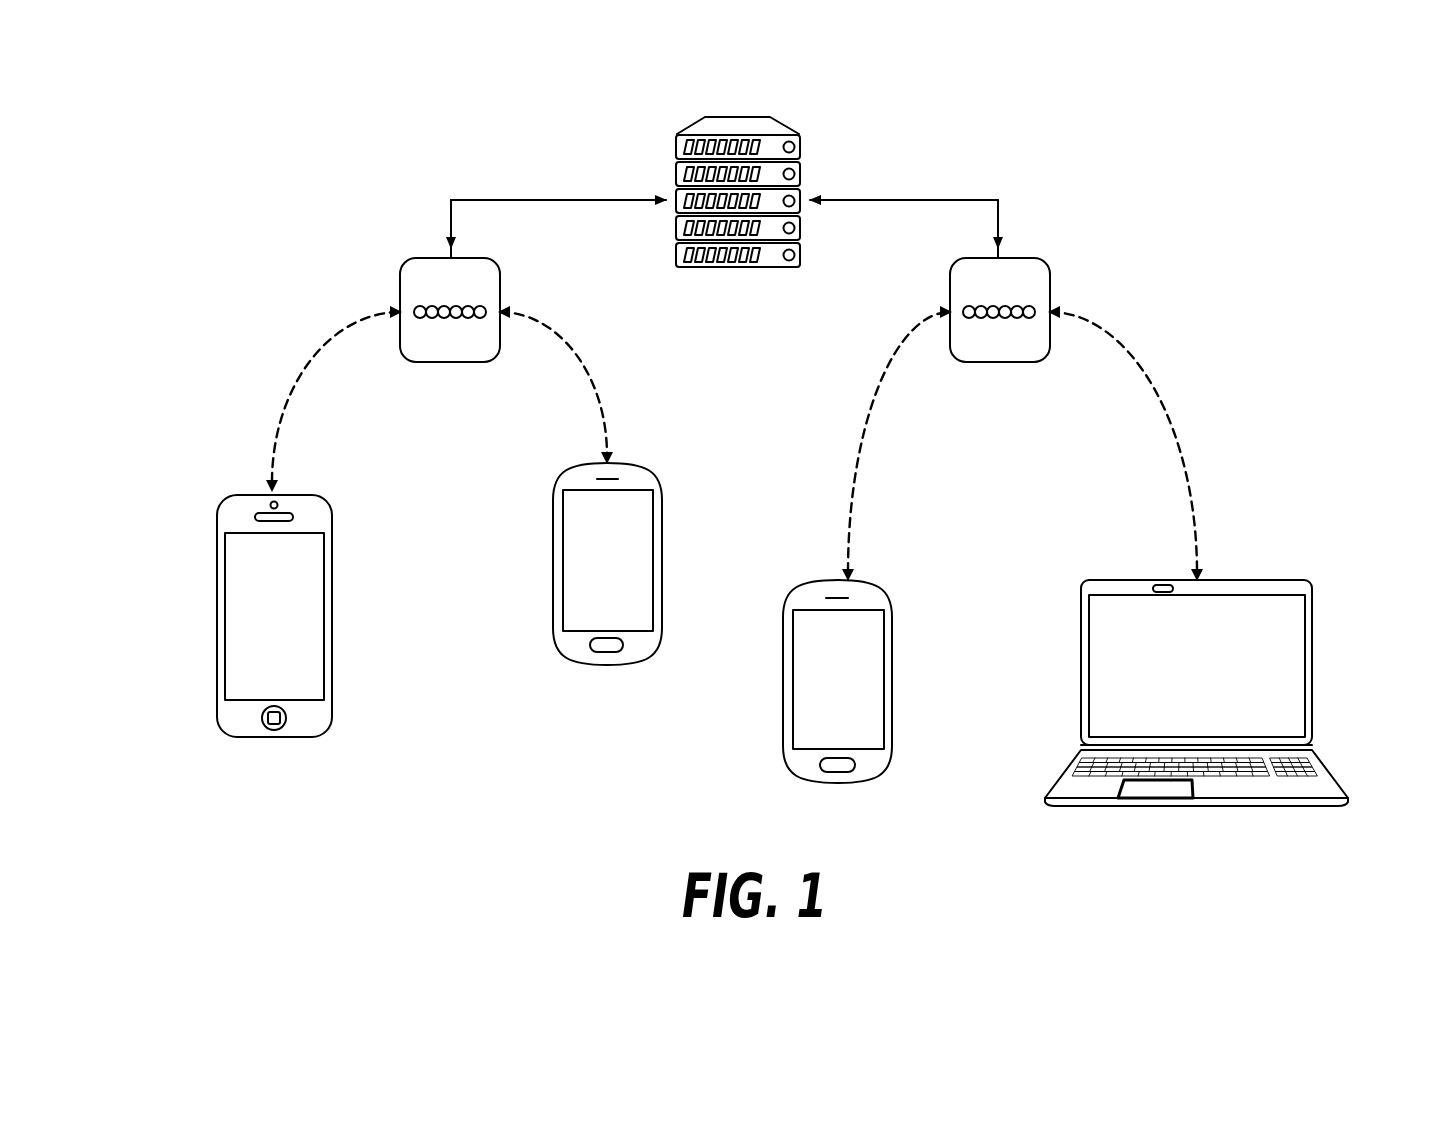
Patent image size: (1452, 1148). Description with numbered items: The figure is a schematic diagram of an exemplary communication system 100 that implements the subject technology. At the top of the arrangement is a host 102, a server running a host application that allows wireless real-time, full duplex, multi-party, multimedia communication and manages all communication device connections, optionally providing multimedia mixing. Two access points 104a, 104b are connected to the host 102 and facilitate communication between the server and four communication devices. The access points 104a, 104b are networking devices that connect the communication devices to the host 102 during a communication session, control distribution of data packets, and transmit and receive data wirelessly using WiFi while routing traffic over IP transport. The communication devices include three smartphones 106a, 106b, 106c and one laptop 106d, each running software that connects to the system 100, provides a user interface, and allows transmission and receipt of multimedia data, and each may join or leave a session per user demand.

The system 100 is at (366, 146).
The host 102 is at (787, 128).
The access point 104a is at (405, 262).
The access point 104b is at (1020, 262).
The communication device 106a is at (217, 592).
The communication device 106b is at (553, 596).
The communication device 106c is at (783, 690).
The communication device 106d is at (1312, 675).